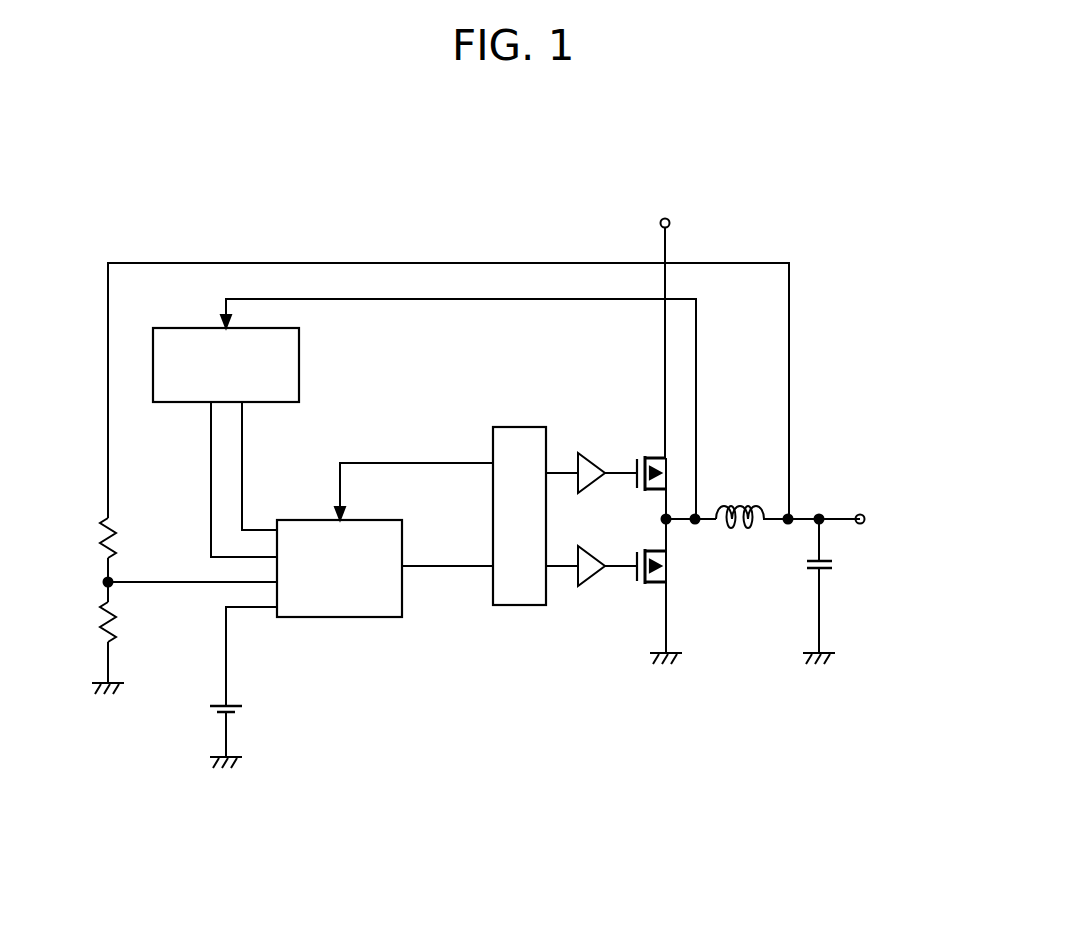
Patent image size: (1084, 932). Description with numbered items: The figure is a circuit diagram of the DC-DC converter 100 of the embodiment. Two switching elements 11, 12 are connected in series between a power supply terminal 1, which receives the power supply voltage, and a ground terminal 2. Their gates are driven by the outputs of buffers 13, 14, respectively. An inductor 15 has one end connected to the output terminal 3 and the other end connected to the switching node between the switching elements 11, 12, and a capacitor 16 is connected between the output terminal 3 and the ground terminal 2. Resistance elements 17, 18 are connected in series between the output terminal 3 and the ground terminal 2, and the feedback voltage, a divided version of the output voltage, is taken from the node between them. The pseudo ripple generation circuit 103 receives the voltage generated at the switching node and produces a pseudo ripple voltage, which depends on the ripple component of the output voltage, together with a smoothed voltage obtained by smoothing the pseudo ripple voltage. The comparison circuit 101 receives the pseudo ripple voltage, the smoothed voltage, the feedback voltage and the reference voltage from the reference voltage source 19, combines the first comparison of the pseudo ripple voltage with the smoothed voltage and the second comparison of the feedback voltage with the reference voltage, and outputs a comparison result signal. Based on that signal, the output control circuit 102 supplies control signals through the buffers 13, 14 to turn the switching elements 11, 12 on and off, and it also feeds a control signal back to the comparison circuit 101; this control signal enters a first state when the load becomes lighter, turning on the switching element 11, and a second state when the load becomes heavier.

The power supply terminal 1 is at (660, 223).
The ground terminal 2 is at (672, 651).
The output terminal 3 is at (861, 513).
The switching element 11 is at (655, 456).
The switching element 12 is at (650, 587).
The buffer 13 is at (598, 455).
The buffer 14 is at (597, 588).
The inductor 15 is at (738, 505).
The capacitor 16 is at (825, 571).
The resistance element 17 is at (116, 523).
The resistance element 18 is at (115, 638).
The reference voltage source 19 is at (220, 703).
The DC-DC converter 100 is at (831, 185).
The comparison circuit 101 is at (375, 619).
The output control circuit 102 is at (520, 607).
The pseudo ripple generation circuit 103 is at (300, 367).